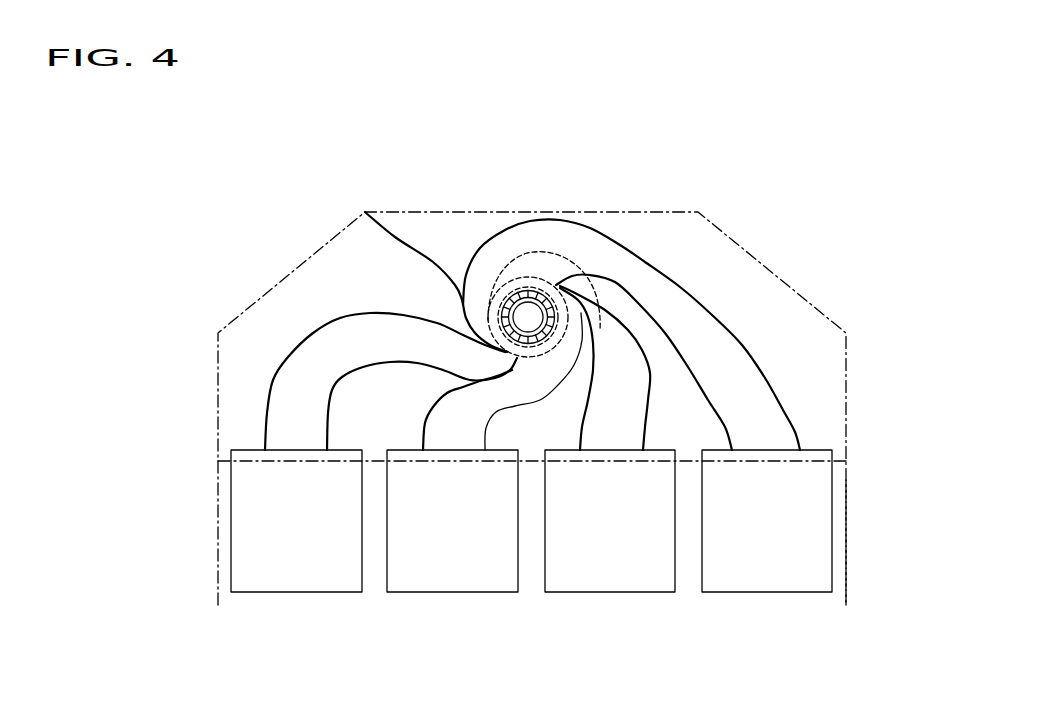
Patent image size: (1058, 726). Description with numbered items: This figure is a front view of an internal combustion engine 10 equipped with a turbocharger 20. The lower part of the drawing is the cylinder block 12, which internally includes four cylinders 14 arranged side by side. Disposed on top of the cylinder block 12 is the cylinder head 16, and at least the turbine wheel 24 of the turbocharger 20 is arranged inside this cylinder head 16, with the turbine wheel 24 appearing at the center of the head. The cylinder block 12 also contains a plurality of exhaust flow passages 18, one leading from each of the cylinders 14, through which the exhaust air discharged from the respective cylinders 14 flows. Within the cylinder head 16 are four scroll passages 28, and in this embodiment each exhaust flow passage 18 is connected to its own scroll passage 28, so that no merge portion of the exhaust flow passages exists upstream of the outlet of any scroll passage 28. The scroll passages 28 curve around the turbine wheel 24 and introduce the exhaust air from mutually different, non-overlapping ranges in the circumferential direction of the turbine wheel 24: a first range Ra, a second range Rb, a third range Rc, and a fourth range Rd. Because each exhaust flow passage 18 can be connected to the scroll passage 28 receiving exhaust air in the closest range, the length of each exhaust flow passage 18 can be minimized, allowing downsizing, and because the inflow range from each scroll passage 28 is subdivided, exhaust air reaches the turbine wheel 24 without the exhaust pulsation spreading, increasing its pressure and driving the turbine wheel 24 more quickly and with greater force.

The internal combustion engine 10 is at (390, 126).
The cylinder block 12 is at (848, 540).
The cylinders 14 is at (532, 553).
The cylinder head 16 is at (752, 253).
The exhaust flow passages 18 is at (468, 547).
The turbocharger 20 is at (437, 286).
The turbine wheel 24 is at (487, 315).
The scroll passages 28 is at (536, 304).
The first range Ra is at (500, 352).
The second range Rb is at (573, 323).
The third range Rc is at (529, 276).
The fourth range Rd is at (462, 300).